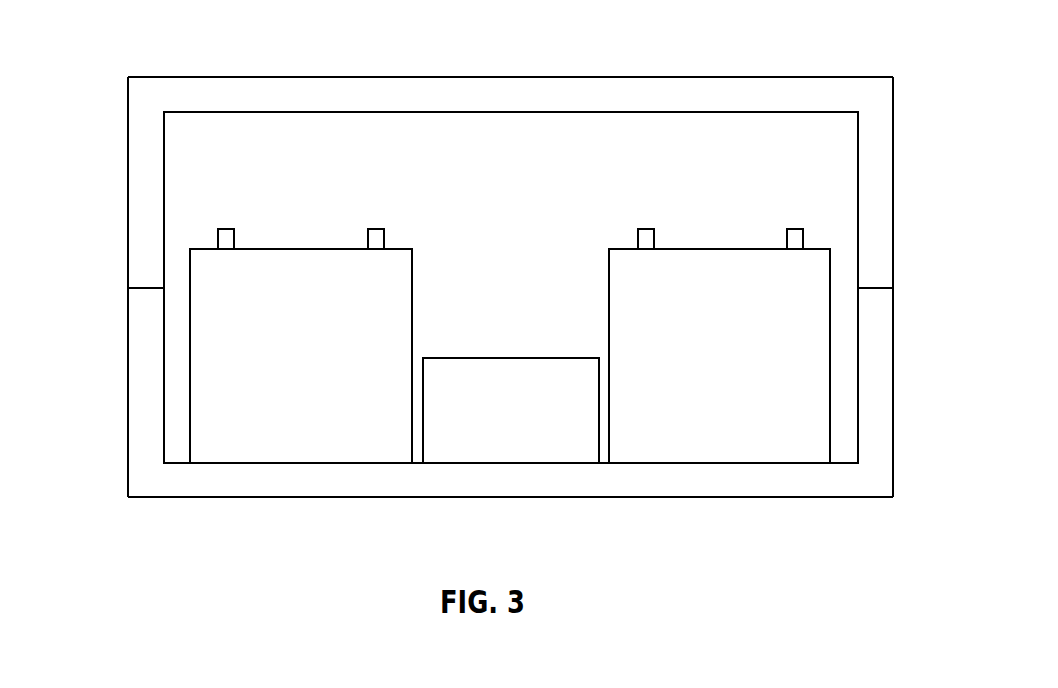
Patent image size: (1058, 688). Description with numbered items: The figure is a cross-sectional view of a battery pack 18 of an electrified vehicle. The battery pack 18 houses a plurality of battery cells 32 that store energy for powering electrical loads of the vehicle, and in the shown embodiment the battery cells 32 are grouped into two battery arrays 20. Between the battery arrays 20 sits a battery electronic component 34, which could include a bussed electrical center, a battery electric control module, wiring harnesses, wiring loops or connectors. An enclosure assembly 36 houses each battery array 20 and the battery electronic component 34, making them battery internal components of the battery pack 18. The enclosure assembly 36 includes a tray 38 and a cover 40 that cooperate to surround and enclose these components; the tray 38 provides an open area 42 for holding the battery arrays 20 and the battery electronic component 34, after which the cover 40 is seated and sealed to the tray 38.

The battery pack 18 is at (872, 45).
The battery array 20 is at (511, 310).
The battery cell 32 is at (217, 373).
The battery electronic component 34 is at (533, 445).
The enclosure assembly 36 is at (124, 127).
The tray 38 is at (292, 499).
The cover 40 is at (220, 88).
The open area 42 is at (525, 301).